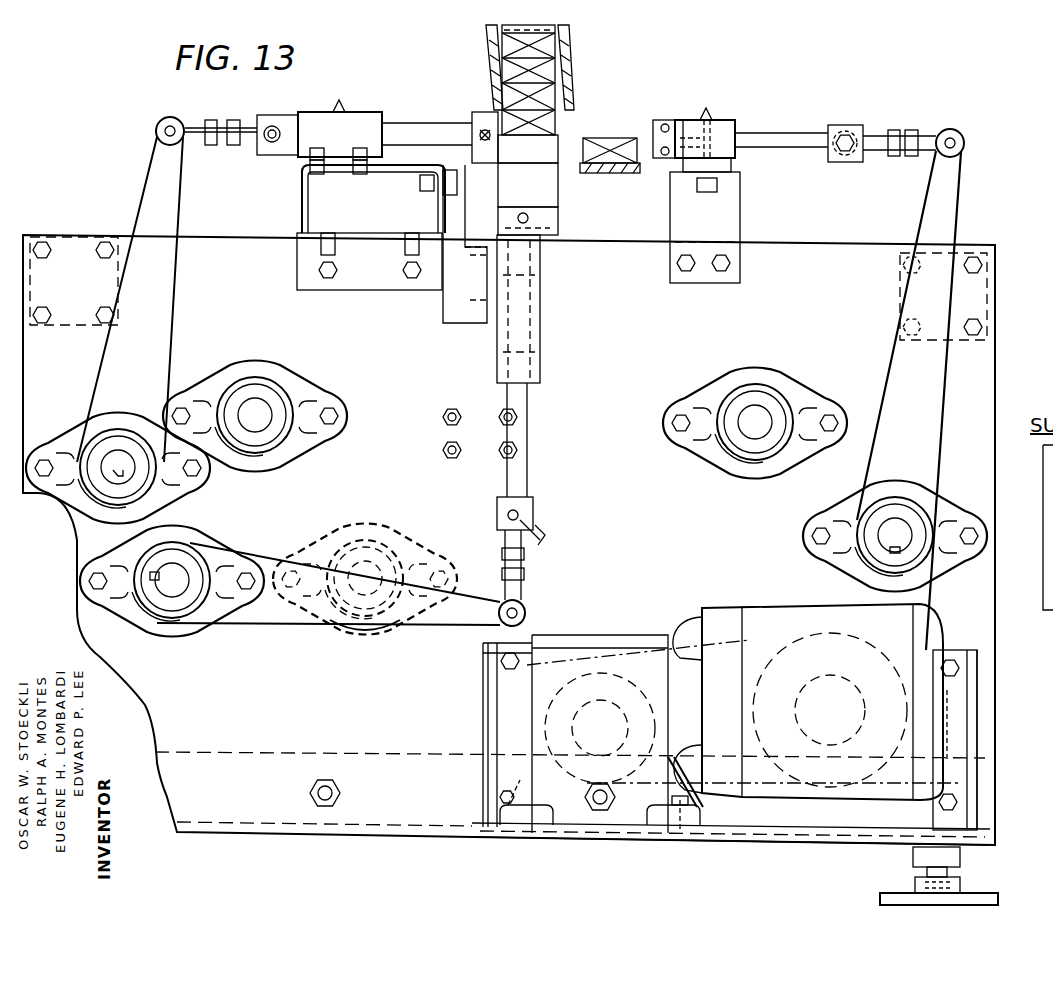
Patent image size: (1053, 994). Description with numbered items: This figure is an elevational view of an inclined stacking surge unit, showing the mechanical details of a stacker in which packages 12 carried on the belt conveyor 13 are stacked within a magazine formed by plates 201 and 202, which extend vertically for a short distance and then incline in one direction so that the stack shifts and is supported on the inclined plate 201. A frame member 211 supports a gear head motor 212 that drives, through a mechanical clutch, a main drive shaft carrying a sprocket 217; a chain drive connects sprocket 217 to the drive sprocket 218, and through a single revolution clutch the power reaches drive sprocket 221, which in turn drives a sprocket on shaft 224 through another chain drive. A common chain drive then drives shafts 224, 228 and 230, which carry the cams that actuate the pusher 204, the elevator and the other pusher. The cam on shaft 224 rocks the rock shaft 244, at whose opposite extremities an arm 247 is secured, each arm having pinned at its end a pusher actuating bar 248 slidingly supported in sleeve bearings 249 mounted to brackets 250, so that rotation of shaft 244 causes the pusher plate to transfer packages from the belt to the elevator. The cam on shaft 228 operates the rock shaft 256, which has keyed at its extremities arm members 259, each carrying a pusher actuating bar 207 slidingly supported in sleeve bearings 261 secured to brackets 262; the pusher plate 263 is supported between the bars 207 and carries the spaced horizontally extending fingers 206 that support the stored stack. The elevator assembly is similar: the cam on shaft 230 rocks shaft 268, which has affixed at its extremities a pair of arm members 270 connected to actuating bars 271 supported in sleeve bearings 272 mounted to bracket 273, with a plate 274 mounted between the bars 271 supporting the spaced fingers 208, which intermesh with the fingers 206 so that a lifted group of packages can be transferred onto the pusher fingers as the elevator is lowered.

The packages 12 is at (609, 138).
The belt conveyor 13 is at (630, 174).
The plate 201 is at (490, 42).
The plate 202 is at (575, 78).
The pusher 204 is at (655, 128).
The spaced fingers 206 is at (528, 149).
The pusher actuating bar 207 is at (420, 128).
The spaced fingers 208 is at (558, 186).
The frame member 211 is at (860, 834).
The gear head motor 212 is at (810, 607).
The sprocket 217 is at (593, 734).
The drive sprocket 218 is at (897, 627).
The drive sprocket 221 is at (845, 680).
The shaft 224 is at (755, 422).
The shaft 228 is at (258, 412).
The shaft 230 is at (365, 572).
The rock shaft 244 is at (895, 535).
The arm 247 is at (930, 383).
The pusher actuating bar 248 is at (770, 133).
The sleeve bearing 249 is at (727, 122).
The bracket 250 is at (740, 218).
The rock shaft 256 is at (125, 468).
The arm member 259 is at (160, 275).
The sleeve bearing 261 is at (360, 112).
The bracket 262 is at (300, 170).
The pusher plate 263 is at (472, 155).
The shaft 268 is at (172, 584).
The arm member 270 is at (280, 552).
The actuating bar 271 is at (527, 466).
The sleeve bearing 272 is at (545, 355).
The bracket 273 is at (490, 330).
The plate 274 is at (558, 218).